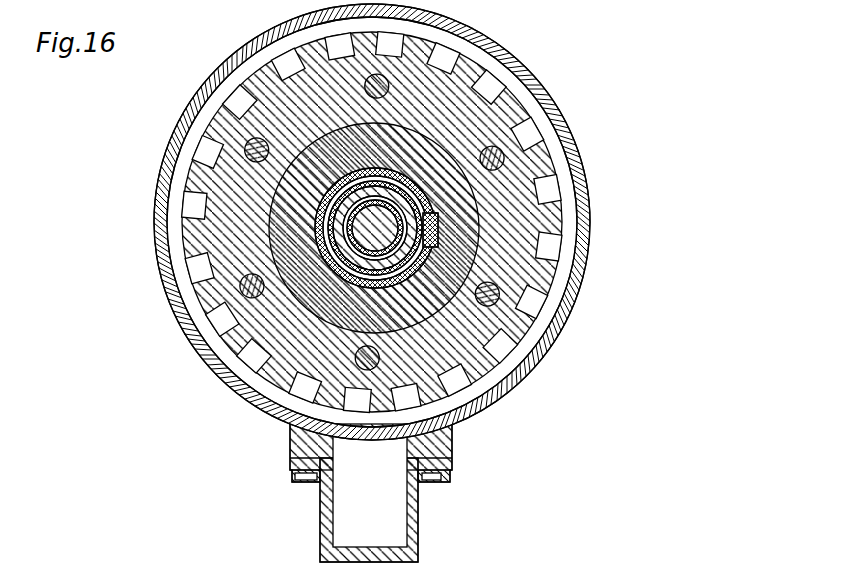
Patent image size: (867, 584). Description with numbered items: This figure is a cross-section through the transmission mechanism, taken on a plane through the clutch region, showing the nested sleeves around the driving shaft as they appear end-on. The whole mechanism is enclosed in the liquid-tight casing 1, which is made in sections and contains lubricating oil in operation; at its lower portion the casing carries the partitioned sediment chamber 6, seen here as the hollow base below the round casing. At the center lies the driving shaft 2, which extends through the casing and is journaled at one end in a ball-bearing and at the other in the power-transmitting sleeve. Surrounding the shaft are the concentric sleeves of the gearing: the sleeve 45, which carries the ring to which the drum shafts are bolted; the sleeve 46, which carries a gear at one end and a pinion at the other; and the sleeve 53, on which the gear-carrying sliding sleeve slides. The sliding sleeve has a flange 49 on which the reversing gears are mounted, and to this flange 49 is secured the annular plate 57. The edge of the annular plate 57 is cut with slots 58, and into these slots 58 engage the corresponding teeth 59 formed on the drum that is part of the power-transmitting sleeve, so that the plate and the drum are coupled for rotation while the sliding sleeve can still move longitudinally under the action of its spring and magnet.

The casing 1 is at (445, 48).
The driving shaft 2 is at (300, 252).
The partitioned sediment chamber 6 is at (418, 527).
The sleeve 45 is at (432, 226).
The sleeve 46 is at (566, 178).
The flange 49 is at (423, 262).
The sleeve 53 is at (438, 238).
The annular plate 57 is at (561, 144).
The slots 58 is at (507, 103).
The teeth 59 is at (492, 82).